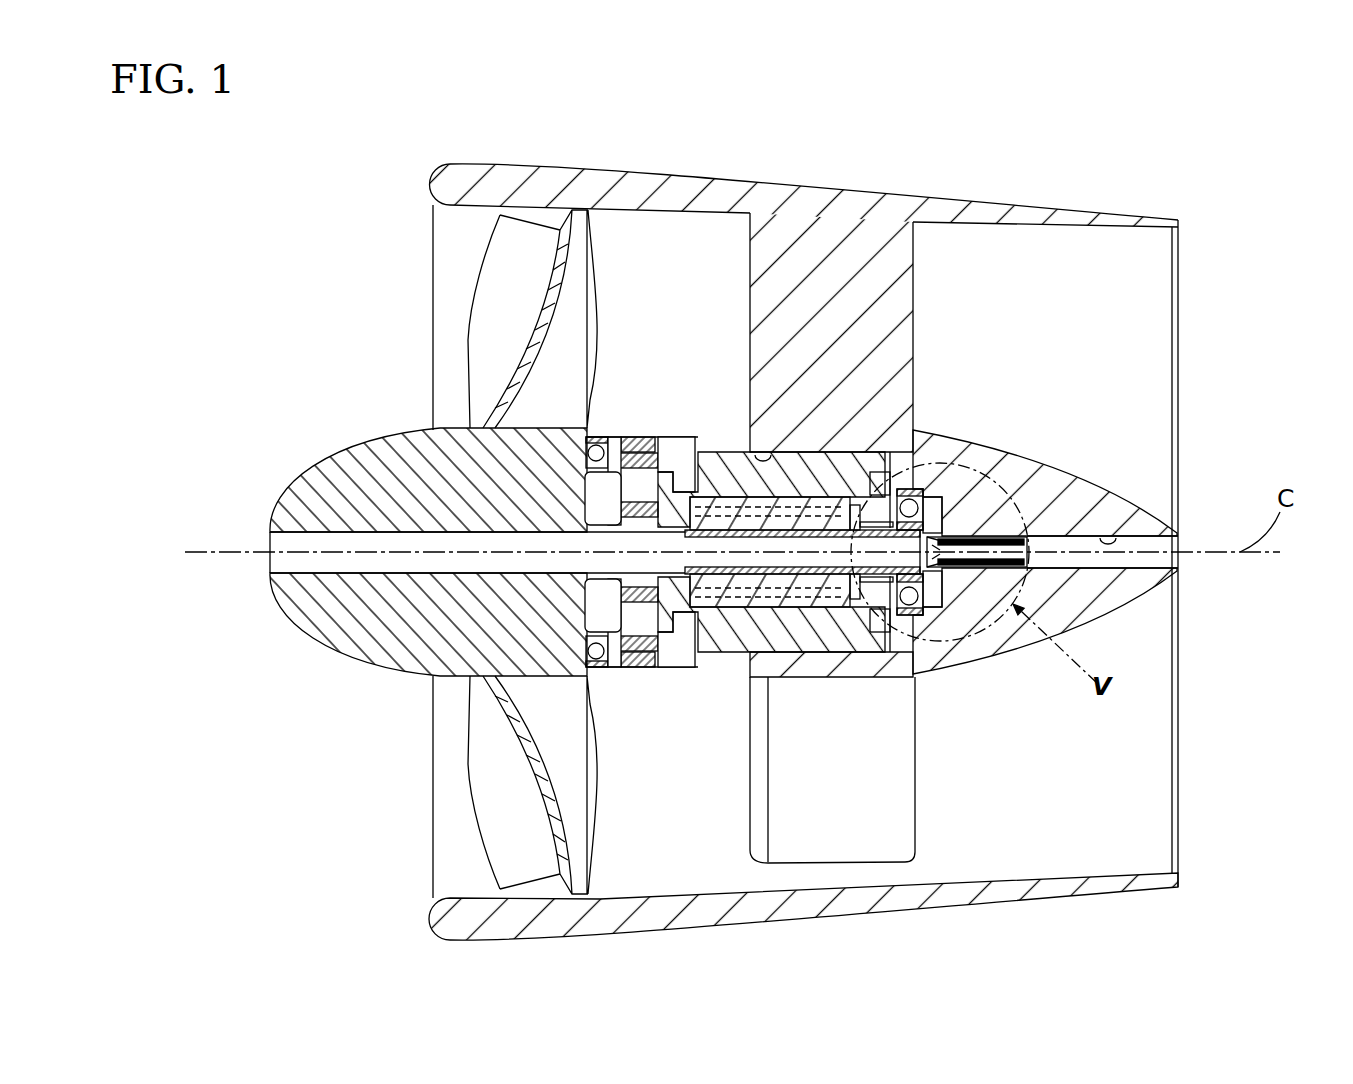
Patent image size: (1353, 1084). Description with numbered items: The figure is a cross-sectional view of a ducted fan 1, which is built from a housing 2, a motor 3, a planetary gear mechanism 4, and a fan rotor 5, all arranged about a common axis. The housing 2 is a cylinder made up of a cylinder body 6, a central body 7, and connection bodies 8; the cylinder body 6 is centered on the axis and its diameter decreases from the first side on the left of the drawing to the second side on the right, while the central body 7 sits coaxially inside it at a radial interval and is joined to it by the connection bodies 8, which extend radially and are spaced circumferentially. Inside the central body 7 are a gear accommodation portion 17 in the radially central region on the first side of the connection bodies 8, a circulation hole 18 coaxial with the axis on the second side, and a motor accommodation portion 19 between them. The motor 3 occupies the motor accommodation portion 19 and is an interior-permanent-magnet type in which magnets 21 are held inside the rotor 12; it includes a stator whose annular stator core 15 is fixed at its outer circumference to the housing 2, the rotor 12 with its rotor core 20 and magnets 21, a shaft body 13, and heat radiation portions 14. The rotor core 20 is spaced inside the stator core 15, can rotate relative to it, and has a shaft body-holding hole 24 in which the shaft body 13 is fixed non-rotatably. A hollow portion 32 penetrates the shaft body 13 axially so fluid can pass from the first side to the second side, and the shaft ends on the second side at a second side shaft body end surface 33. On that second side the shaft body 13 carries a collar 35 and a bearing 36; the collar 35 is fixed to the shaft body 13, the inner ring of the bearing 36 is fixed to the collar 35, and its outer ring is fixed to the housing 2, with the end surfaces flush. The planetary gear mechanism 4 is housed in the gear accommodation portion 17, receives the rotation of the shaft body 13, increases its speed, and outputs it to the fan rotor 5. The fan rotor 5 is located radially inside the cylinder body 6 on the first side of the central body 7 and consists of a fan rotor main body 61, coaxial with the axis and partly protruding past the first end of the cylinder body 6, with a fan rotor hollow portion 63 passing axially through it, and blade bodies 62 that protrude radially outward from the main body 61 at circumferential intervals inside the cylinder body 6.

The ducted fan 1 is at (358, 130).
The housing 2 is at (803, 521).
The motor 3 is at (831, 538).
The planetary gear mechanism 4 is at (641, 428).
The fan rotor 5 is at (400, 551).
The cylinder body 6 is at (640, 188).
The central body 7 is at (1055, 487).
The connection bodies 8 is at (880, 258).
The rotor 12 is at (737, 480).
The shaft body 13 is at (731, 560).
The heat radiation portions 14 is at (1032, 580).
The stator core 15 is at (893, 470).
The gear accommodation portion 17 is at (697, 447).
The circulation hole 18 is at (1112, 540).
The motor accommodation portion 19 is at (762, 447).
The rotor core 20 is at (823, 478).
The magnets 21 is at (790, 592).
The shaft body-holding hole 24 is at (795, 590).
The hollow portion 32 is at (710, 600).
The second side shaft body end surface 33 is at (942, 578).
The collar 35 is at (915, 515).
The bearing 36 is at (912, 604).
The fan rotor main body 61 is at (378, 470).
The blade bodies 62 is at (495, 305).
The fan rotor hollow portion 63 is at (325, 572).